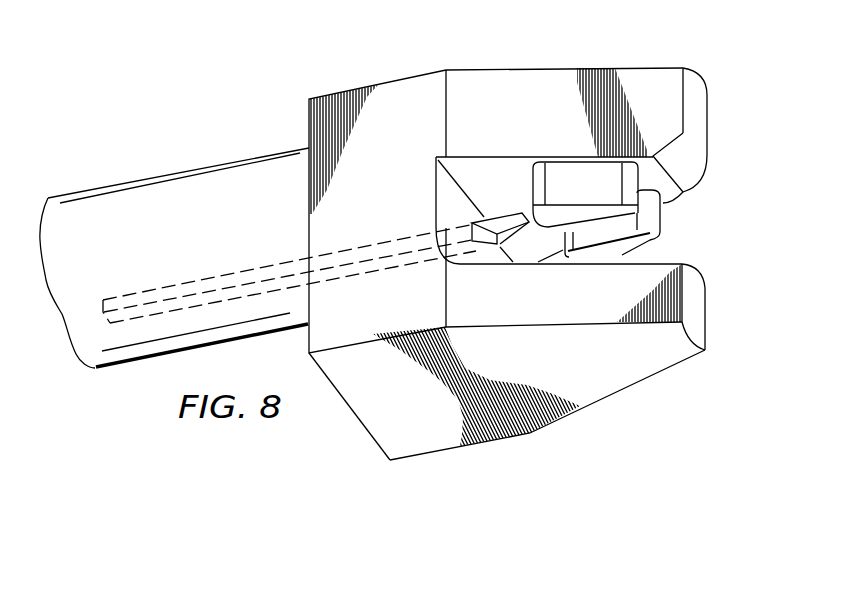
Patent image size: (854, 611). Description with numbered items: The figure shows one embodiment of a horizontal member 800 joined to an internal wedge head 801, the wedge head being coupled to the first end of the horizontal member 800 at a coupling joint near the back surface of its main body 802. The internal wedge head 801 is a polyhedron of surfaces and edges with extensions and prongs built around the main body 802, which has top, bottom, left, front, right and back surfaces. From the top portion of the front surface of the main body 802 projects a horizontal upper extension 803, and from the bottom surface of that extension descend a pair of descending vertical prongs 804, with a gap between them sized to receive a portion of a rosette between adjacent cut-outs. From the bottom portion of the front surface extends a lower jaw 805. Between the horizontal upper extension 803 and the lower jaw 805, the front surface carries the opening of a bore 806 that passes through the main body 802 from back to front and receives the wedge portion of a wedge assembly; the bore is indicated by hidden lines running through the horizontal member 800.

The horizontal member 800 is at (175, 173).
The internal wedge head 801 is at (388, 70).
The main body 802 is at (497, 221).
The horizontal upper extension 803 is at (537, 90).
The descending vertical prongs 804 is at (572, 180).
The lower jaw 805 is at (562, 305).
The bore 806 is at (392, 240).